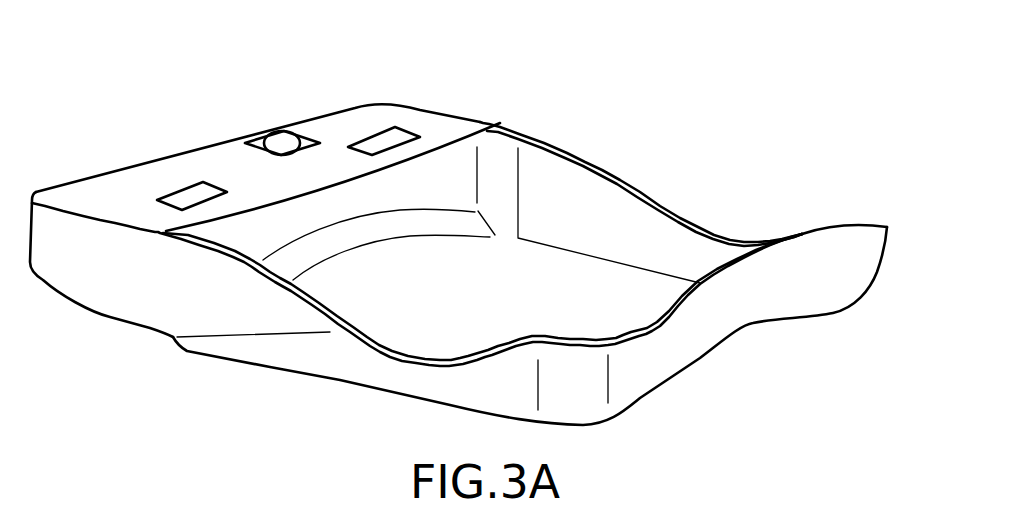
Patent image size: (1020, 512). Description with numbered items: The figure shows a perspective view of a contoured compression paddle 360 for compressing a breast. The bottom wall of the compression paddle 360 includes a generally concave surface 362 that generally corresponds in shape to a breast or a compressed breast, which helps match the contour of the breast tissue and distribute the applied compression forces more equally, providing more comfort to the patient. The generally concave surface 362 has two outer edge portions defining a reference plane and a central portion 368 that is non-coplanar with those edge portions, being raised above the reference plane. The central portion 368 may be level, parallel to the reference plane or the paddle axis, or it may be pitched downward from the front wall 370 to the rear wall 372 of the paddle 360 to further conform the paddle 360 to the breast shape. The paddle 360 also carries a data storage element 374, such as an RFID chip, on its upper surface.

The contoured compression paddle 360 is at (136, 88).
The generally concave surface 362 is at (722, 368).
The central portion 368 is at (747, 306).
The front wall 370 is at (790, 279).
The rear wall 372 is at (452, 170).
The data storage element 374 is at (282, 142).